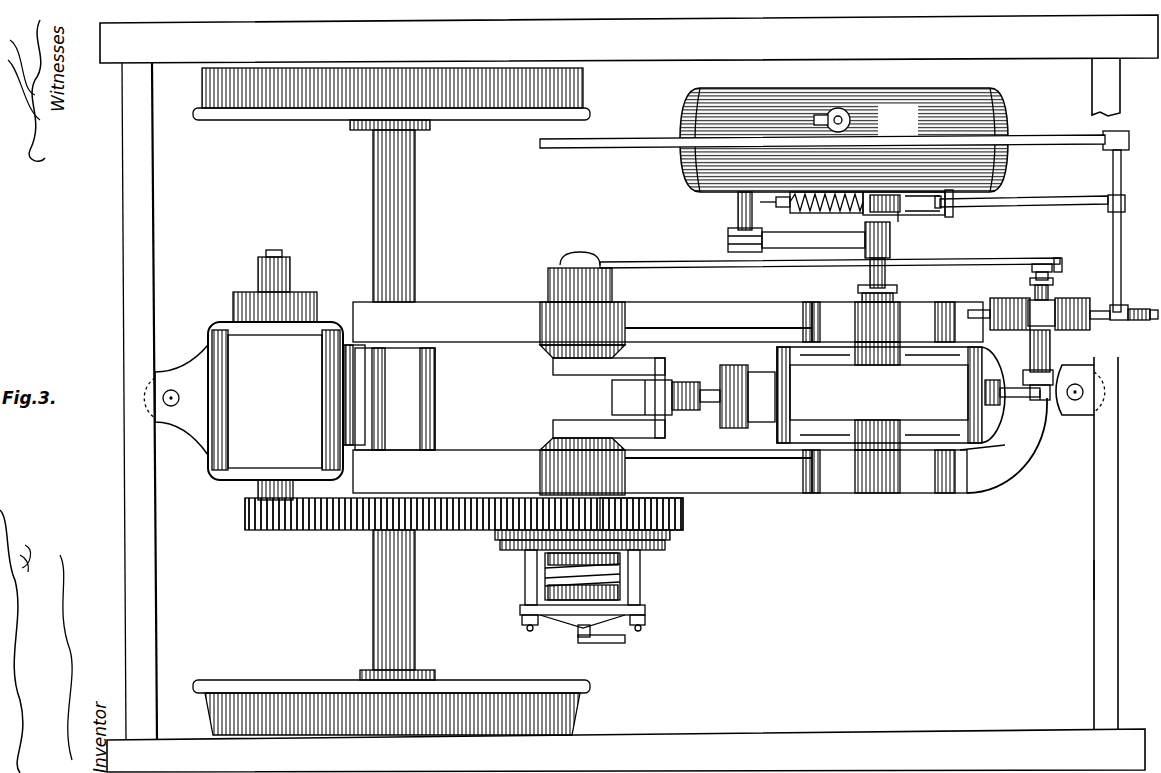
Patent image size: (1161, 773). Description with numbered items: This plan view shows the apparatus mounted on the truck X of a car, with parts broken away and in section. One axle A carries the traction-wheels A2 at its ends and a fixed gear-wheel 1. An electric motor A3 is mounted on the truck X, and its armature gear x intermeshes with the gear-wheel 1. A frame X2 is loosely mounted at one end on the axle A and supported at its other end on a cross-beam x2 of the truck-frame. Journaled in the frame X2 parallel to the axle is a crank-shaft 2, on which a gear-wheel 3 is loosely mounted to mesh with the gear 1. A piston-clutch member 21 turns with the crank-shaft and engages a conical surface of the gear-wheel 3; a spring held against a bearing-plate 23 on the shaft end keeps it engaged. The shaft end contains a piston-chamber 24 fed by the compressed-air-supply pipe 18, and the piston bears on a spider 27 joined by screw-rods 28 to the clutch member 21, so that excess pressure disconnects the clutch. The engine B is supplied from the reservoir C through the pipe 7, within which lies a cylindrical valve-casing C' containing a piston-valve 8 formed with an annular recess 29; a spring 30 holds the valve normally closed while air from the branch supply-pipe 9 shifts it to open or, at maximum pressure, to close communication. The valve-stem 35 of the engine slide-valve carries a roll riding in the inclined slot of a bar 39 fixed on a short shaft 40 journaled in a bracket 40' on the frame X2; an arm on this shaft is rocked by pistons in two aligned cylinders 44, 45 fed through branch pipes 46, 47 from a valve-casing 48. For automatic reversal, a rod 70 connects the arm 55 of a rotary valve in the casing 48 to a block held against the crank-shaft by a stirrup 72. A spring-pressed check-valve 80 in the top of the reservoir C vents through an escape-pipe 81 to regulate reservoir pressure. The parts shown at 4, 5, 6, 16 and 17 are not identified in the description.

The gear-wheel 1 is at (348, 522).
The crank-shaft 2 is at (560, 262).
The gear-wheel 3 is at (683, 516).
The fork 4 is at (597, 370).
The hub 5 is at (710, 405).
The piston 6 is at (879, 395).
The pipe 7 is at (886, 268).
The piston-valve 8 is at (945, 207).
The branch supply-pipe 9 is at (1050, 200).
The pipe 16 is at (808, 249).
The coupling 17 is at (734, 238).
The compressed-air-supply pipe 18 is at (612, 641).
The piston-clutch member 21 is at (500, 546).
The bearing-plate 23 is at (640, 598).
The piston-chamber 24 is at (545, 580).
The spider 27 is at (522, 612).
The screw-rods 28 is at (526, 560).
The annular recess 29 is at (898, 214).
The spring 30 is at (811, 212).
The valve-stem 35 is at (1040, 400).
The slotted bar 39 is at (1050, 368).
The short shaft 40 is at (1057, 420).
The standard or bracket 40' is at (1025, 365).
The cylinder 44 is at (989, 305).
The cylinder 45 is at (1076, 300).
The branch air-supply pipe 46 is at (985, 318).
The branch air-supply pipe 47 is at (1106, 320).
The valve-casing 48 is at (1027, 300).
The arm 55 is at (1053, 268).
The rod 70 is at (728, 263).
The stirrup 72 is at (548, 292).
The check-valve 80 is at (843, 110).
The escape-pipe 81 is at (818, 114).
The axle A is at (410, 246).
The traction-wheels A2 is at (496, 112).
The electric motor A3 is at (254, 375).
The engine B is at (891, 396).
The reservoir C is at (844, 140).
The valve-casing C' is at (908, 214).
The truck X is at (121, 171).
The frame X2 is at (700, 397).
The gear x is at (244, 518).
The cross-beam x2 is at (1094, 572).